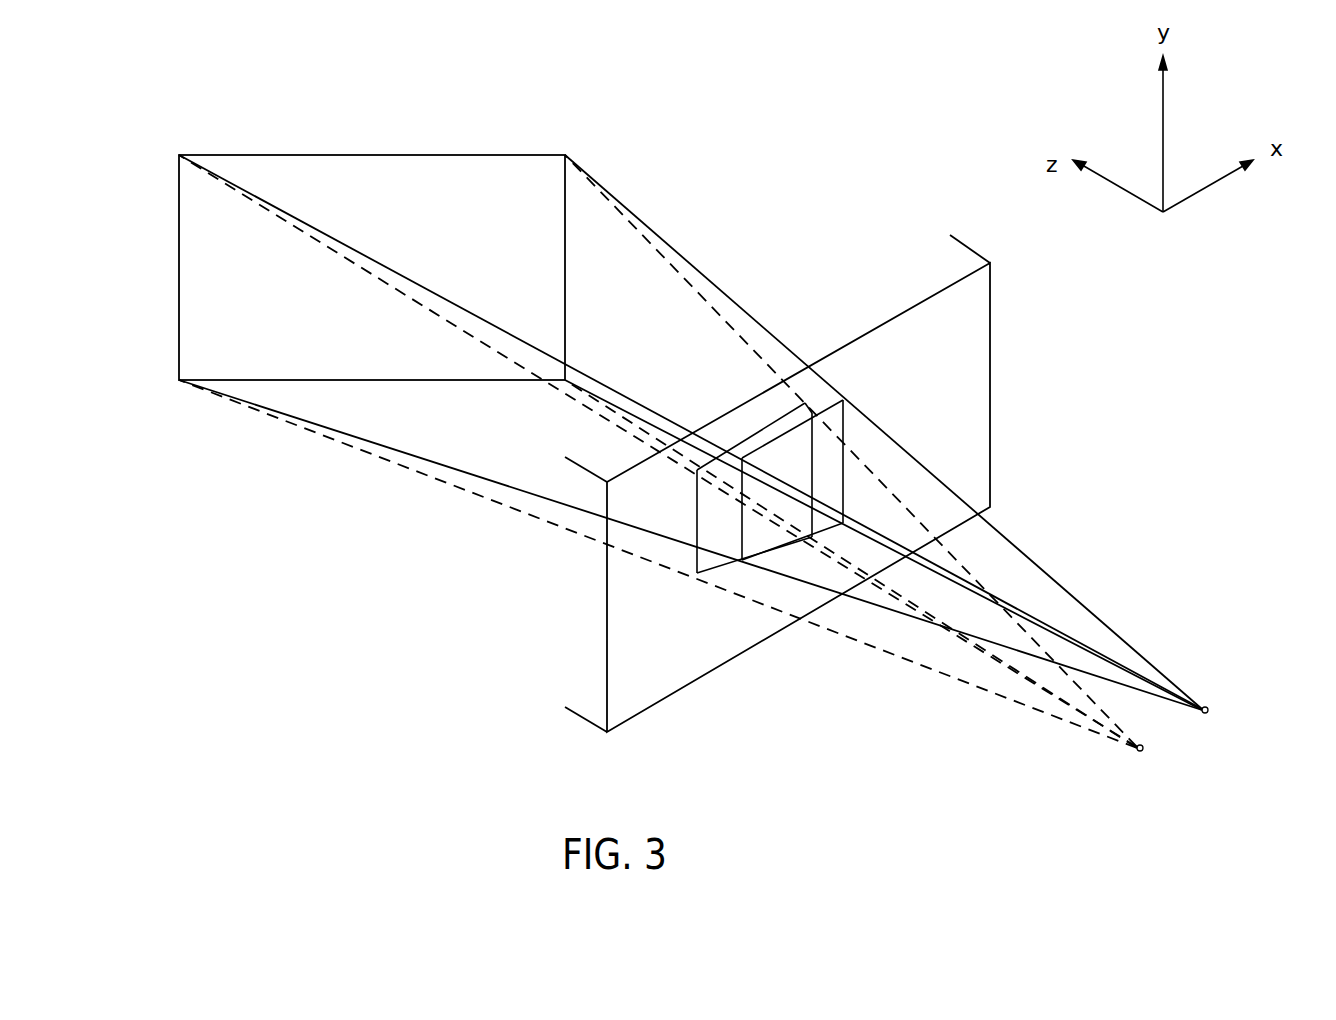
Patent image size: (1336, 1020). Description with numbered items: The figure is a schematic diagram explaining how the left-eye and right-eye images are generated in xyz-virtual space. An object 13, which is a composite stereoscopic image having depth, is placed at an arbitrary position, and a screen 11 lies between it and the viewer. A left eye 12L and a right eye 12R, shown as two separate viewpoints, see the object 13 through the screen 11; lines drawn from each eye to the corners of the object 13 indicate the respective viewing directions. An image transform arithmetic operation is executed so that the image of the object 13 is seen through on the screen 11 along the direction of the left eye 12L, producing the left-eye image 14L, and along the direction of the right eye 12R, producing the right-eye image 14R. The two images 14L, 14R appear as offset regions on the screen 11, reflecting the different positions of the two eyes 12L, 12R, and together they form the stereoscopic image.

The screen 11 is at (985, 422).
The left eye 12L is at (1137, 752).
The right eye 12R is at (1209, 706).
The object 13 is at (384, 156).
The left-eye image 14L is at (697, 535).
The right-eye image 14R is at (857, 412).